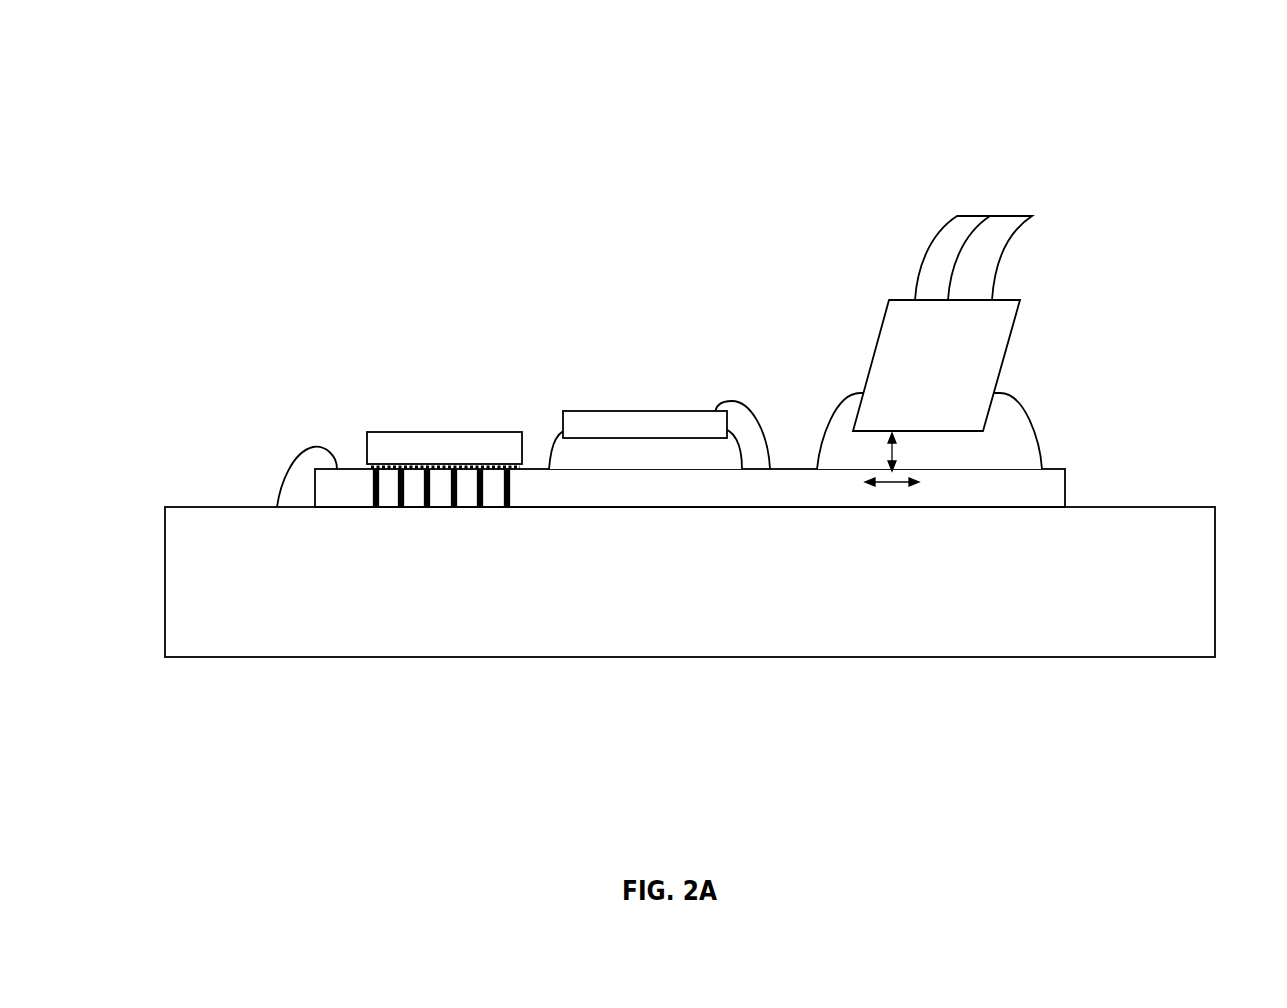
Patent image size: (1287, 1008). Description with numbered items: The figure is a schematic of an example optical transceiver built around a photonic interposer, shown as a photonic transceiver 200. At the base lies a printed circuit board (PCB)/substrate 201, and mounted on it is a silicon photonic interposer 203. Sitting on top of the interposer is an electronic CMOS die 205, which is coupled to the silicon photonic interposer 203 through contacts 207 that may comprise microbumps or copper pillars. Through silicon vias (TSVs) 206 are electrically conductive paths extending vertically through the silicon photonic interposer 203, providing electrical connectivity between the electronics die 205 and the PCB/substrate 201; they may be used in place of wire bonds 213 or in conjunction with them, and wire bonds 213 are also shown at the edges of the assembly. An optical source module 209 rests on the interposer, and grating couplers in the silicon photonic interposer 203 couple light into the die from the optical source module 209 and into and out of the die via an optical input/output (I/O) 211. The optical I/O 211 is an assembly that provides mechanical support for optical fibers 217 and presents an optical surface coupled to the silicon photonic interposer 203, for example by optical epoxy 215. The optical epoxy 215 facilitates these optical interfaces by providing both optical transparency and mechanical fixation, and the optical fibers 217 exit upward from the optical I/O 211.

The photonic transceiver 200 is at (243, 104).
The printed circuit board (PCB)/substrate 201 is at (710, 609).
The silicon photonic interposer 203 is at (830, 499).
The electronic CMOS die 205 is at (503, 461).
The through silicon vias (TSVs) 206 is at (467, 515).
The contacts 207 is at (360, 480).
The optical source module 209 is at (718, 437).
The optical input/output (I/O) 211 is at (960, 394).
The wire bonds 213 is at (286, 437).
The optical epoxy 215 is at (1010, 467).
The optical fibers 217 is at (944, 212).